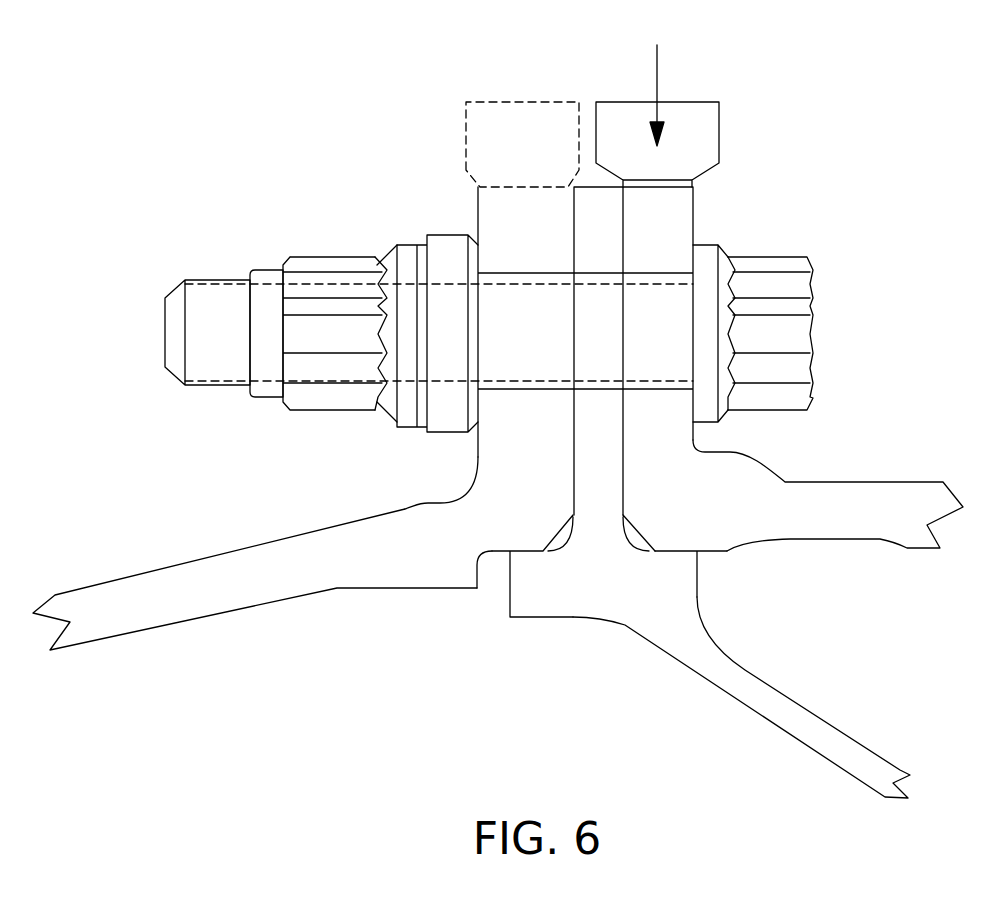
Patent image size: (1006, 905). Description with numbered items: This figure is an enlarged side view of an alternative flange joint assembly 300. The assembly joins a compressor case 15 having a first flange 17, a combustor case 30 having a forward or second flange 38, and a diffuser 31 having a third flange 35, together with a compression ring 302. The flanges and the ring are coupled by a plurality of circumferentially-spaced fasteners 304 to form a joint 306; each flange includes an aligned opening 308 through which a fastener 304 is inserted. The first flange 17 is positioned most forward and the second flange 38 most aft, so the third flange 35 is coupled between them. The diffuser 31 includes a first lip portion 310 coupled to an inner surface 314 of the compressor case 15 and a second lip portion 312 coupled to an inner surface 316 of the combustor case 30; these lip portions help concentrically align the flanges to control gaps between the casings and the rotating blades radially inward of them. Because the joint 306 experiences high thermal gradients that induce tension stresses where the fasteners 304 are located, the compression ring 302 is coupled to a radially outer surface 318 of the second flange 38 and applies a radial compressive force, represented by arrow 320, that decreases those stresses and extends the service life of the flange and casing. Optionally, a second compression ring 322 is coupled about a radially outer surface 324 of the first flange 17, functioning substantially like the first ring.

The flange joint assembly 300 is at (130, 98).
The joint 306 is at (296, 171).
The second compression ring 322 is at (522, 100).
The arrow 320 is at (658, 81).
The compression ring 302 is at (703, 100).
The radially outer surface 324 is at (512, 185).
The radially outer surface 318 is at (658, 187).
The second flange 38 is at (677, 217).
The first flange 17 is at (517, 422).
The aligned opening 308 is at (657, 400).
The fastener 304 is at (800, 307).
The combustor case 30 is at (882, 498).
The inner surface 316 is at (707, 552).
The second lip portion 312 is at (668, 582).
The diffuser 31 is at (788, 715).
The first lip portion 310 is at (528, 560).
The inner surface 314 is at (477, 551).
The third flange 35 is at (600, 468).
The compressor case 15 is at (174, 590).